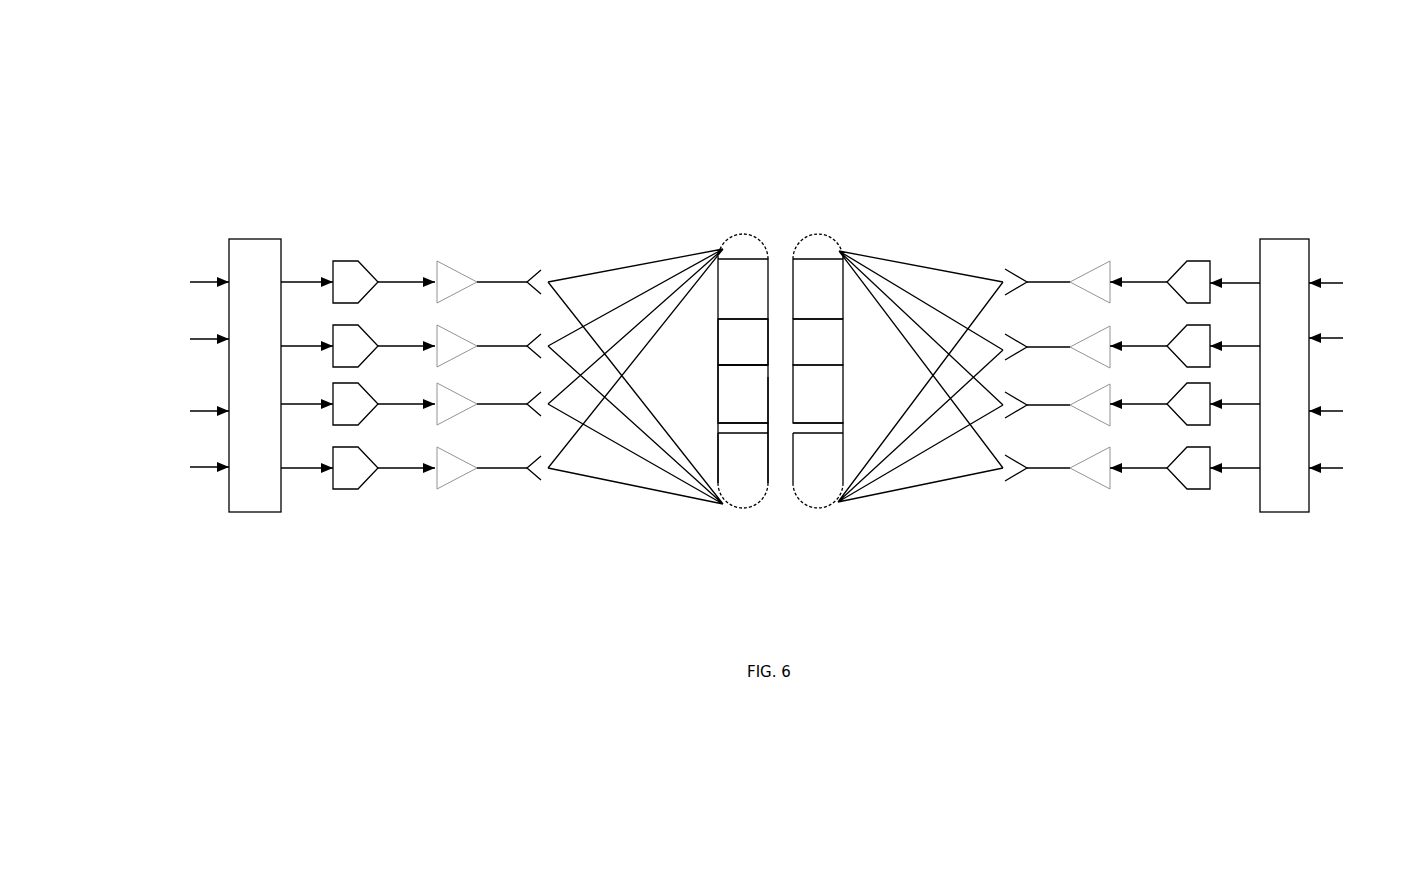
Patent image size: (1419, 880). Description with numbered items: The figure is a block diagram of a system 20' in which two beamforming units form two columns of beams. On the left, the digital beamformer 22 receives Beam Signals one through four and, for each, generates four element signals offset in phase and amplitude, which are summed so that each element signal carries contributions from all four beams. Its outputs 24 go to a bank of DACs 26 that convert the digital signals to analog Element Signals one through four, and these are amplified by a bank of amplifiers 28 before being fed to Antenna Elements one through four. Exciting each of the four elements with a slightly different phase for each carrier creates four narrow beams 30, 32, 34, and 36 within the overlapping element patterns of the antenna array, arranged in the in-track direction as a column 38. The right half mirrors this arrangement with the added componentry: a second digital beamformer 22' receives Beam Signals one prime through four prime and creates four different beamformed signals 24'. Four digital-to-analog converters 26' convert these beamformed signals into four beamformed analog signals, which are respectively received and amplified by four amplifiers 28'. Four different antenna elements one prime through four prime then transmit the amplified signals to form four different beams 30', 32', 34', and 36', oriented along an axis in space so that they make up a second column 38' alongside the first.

The system 20' is at (770, 336).
The digital beamformer 22 is at (201, 421).
The second digital beamformer 22' is at (1339, 421).
The outputs 24 is at (307, 336).
The beamformed signals 24' is at (1235, 336).
The DACs 26 is at (383, 406).
The digital-to-analog converters 26' is at (1163, 401).
The amplifiers 28 is at (481, 406).
The amplifiers 28' is at (1071, 404).
The beam 30 is at (726, 388).
The beam 30' is at (854, 384).
The beam 32 is at (714, 343).
The beam 32' is at (849, 346).
The beam 34 is at (714, 394).
The beam 34' is at (849, 394).
The beam 36 is at (755, 512).
The beam 36' is at (854, 508).
The column 38 is at (743, 538).
The column 38' is at (818, 537).